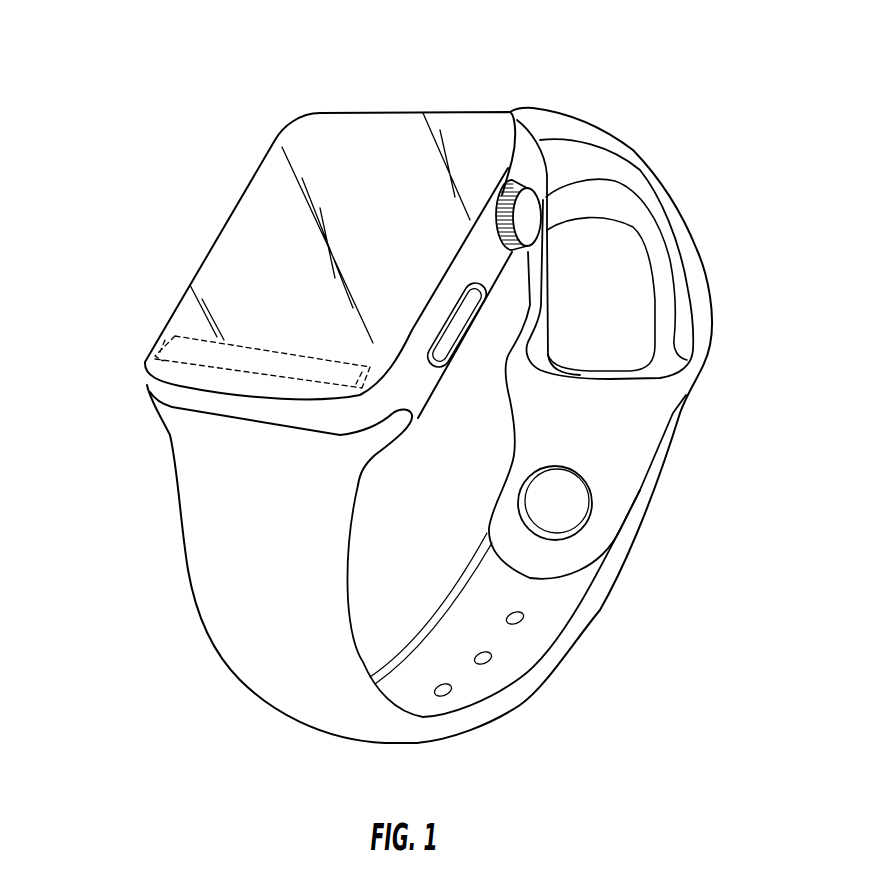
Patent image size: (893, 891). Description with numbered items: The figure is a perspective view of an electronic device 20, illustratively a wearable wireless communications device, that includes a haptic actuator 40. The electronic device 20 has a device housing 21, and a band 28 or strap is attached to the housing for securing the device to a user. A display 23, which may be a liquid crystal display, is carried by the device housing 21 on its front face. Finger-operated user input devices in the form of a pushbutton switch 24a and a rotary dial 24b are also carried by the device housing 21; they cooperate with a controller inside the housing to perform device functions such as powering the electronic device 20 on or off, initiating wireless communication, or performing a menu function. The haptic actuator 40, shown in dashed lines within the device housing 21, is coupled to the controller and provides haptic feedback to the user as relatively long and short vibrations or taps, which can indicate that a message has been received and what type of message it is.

The electronic device 20 is at (408, 384).
The device housing 21 is at (311, 298).
The display 23 is at (256, 228).
The pushbutton switch 24a is at (599, 380).
The rotary dial 24b is at (597, 158).
The band 28 is at (414, 425).
The haptic actuator 40 is at (211, 388).